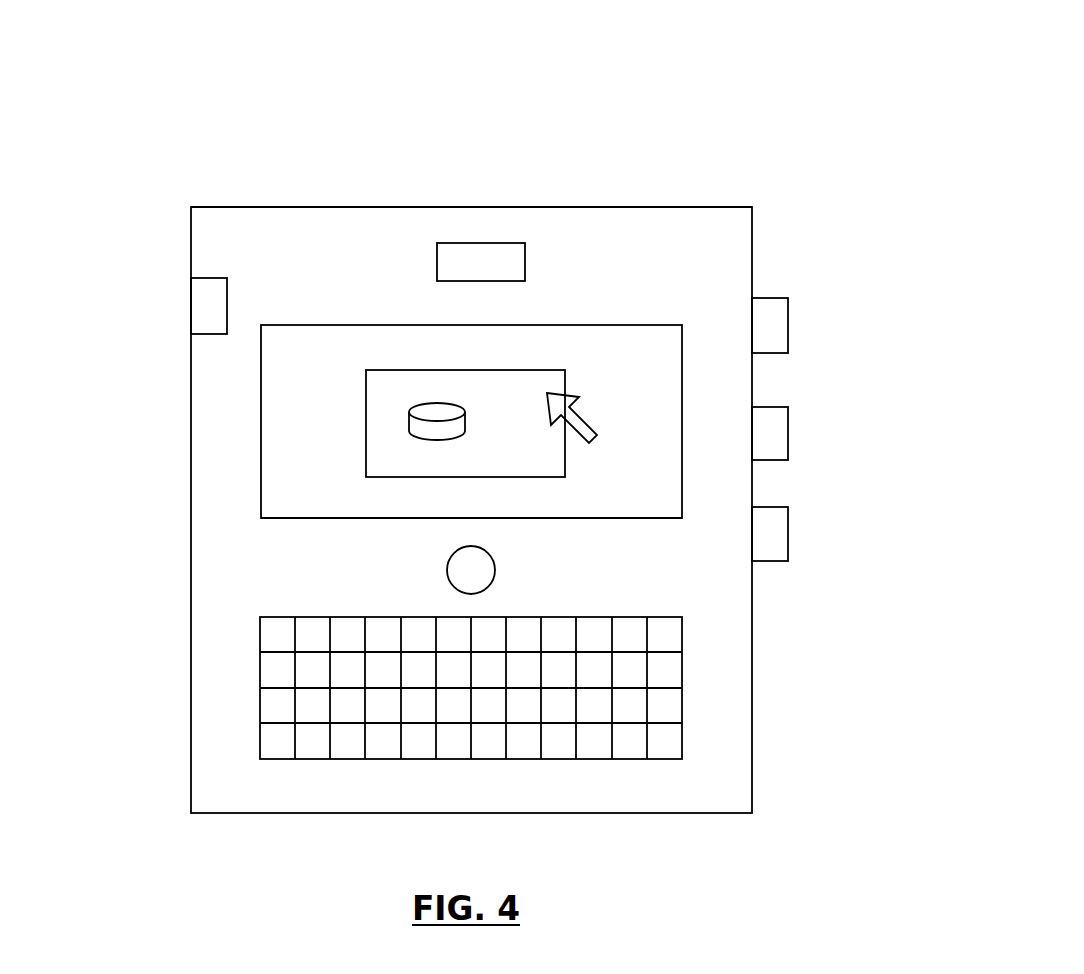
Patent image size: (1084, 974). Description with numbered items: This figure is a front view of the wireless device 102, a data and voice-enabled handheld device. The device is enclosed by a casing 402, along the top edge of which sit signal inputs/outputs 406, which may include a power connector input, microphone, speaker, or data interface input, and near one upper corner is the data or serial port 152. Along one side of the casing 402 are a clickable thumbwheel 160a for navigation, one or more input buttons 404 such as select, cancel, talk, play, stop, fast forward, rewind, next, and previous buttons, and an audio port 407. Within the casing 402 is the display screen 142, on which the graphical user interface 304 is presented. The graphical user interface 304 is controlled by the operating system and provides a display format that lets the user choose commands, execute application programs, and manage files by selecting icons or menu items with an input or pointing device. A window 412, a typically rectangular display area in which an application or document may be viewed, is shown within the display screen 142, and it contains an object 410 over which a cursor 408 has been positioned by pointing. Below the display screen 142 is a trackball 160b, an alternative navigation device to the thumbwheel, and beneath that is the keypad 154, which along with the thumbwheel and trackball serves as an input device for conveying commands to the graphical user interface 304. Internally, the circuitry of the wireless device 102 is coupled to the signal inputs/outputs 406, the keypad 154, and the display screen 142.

The wireless device 102 is at (712, 98).
The casing 402 is at (331, 243).
The signal inputs/outputs 406 is at (488, 243).
The data or serial port 152 is at (209, 306).
The display screen 142 is at (261, 368).
The graphical user interface 304 is at (279, 405).
The window 412 is at (525, 387).
The object 410 is at (409, 423).
The cursor 408 is at (593, 437).
The clickable thumbwheel 160a is at (788, 325).
The input buttons 404 is at (788, 433).
The audio port 407 is at (788, 535).
The trackball 160b is at (494, 560).
The keypad 154 is at (682, 668).